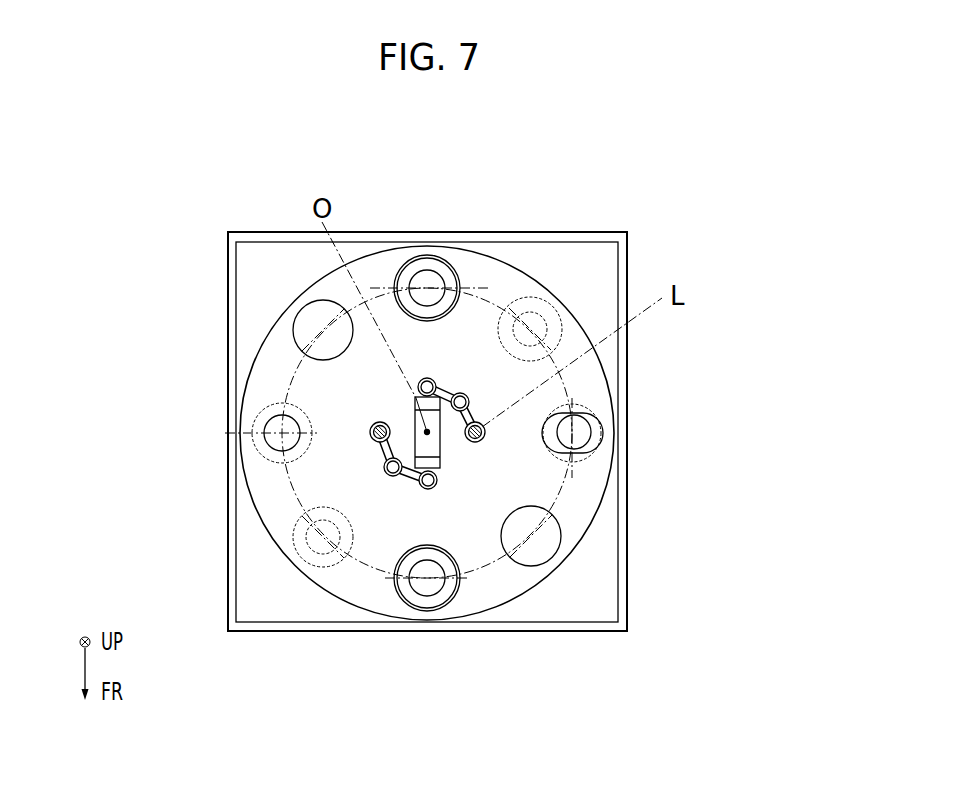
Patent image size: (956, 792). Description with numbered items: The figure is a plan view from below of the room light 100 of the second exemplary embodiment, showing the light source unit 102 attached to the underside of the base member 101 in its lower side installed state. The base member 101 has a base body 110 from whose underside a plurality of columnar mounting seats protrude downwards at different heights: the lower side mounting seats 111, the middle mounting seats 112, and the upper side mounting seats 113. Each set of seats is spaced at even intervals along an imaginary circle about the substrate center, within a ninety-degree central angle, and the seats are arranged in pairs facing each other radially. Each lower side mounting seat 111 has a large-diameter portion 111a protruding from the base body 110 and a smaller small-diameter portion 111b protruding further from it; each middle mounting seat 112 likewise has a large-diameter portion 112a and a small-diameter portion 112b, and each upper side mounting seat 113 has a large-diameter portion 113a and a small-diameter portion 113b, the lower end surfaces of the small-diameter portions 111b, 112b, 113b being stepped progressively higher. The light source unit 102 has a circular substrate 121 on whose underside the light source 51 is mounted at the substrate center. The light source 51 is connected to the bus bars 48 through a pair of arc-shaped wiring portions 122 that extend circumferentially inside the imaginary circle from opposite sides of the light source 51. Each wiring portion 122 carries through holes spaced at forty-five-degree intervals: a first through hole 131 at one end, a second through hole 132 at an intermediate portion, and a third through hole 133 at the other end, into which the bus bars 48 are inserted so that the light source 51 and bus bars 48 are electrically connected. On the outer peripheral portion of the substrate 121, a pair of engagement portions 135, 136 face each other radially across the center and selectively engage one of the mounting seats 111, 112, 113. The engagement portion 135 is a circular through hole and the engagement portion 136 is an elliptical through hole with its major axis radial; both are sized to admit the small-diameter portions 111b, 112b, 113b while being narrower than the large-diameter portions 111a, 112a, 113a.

The room light 100 is at (684, 210).
The base member 101 is at (632, 590).
The light source unit 102 is at (521, 601).
The base body 110 is at (600, 548).
The lower side mounting seat 111 is at (666, 435).
The large-diameter portion 111a is at (600, 440).
The small-diameter portion 111b is at (607, 413).
The middle mounting seat 112 is at (569, 246).
The large-diameter portion 112a is at (547, 318).
The small-diameter portion 112b is at (537, 296).
The upper side mounting seat 113 is at (427, 220).
The large-diameter portion 113a is at (447, 257).
The small-diameter portion 113b is at (406, 240).
The substrate 121 is at (552, 578).
The wiring portion 122 is at (385, 455).
The first through hole 131 is at (424, 485).
The second through hole 132 is at (388, 472).
The third through hole 133 is at (376, 436).
The engagement portion 135 is at (253, 437).
The engagement portion 136 is at (586, 433).
The bus bar 48 is at (484, 426).
The light source 51 is at (441, 450).